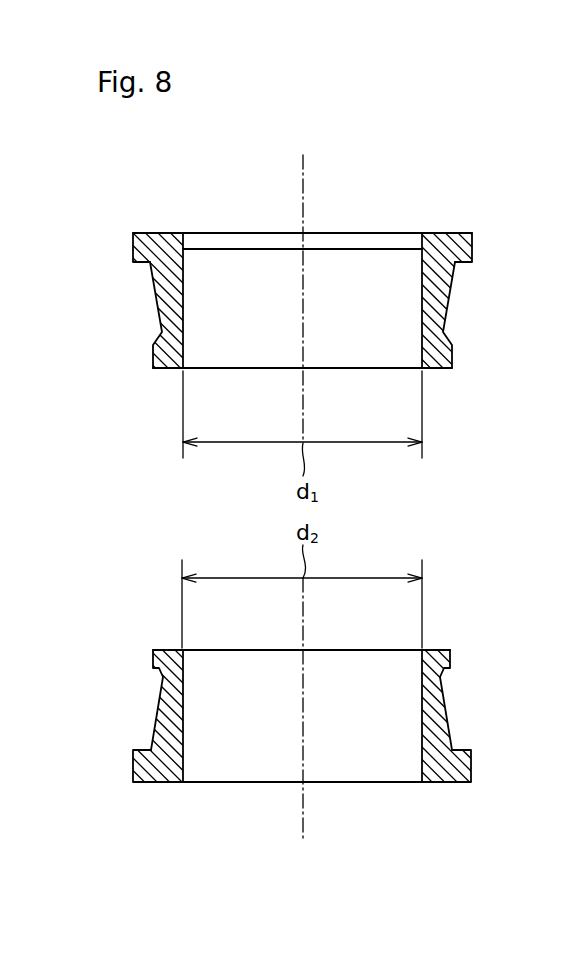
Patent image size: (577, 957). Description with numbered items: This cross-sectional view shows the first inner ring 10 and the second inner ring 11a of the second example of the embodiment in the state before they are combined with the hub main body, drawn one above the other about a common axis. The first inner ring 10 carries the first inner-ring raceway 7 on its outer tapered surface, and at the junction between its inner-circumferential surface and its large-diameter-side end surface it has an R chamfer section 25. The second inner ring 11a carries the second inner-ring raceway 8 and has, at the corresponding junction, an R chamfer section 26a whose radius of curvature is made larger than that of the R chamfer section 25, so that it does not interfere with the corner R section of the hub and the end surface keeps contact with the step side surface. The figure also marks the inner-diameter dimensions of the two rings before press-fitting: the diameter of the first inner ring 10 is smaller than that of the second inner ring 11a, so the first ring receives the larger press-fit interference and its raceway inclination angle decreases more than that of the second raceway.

The first inner-ring raceway 7 is at (288, 266).
The R chamfer section 25 is at (423, 235).
The first inner ring 10 is at (448, 288).
The second inner-ring raceway 8 is at (288, 763).
The second inner ring 11a is at (448, 713).
The R chamfer section 26a is at (422, 783).